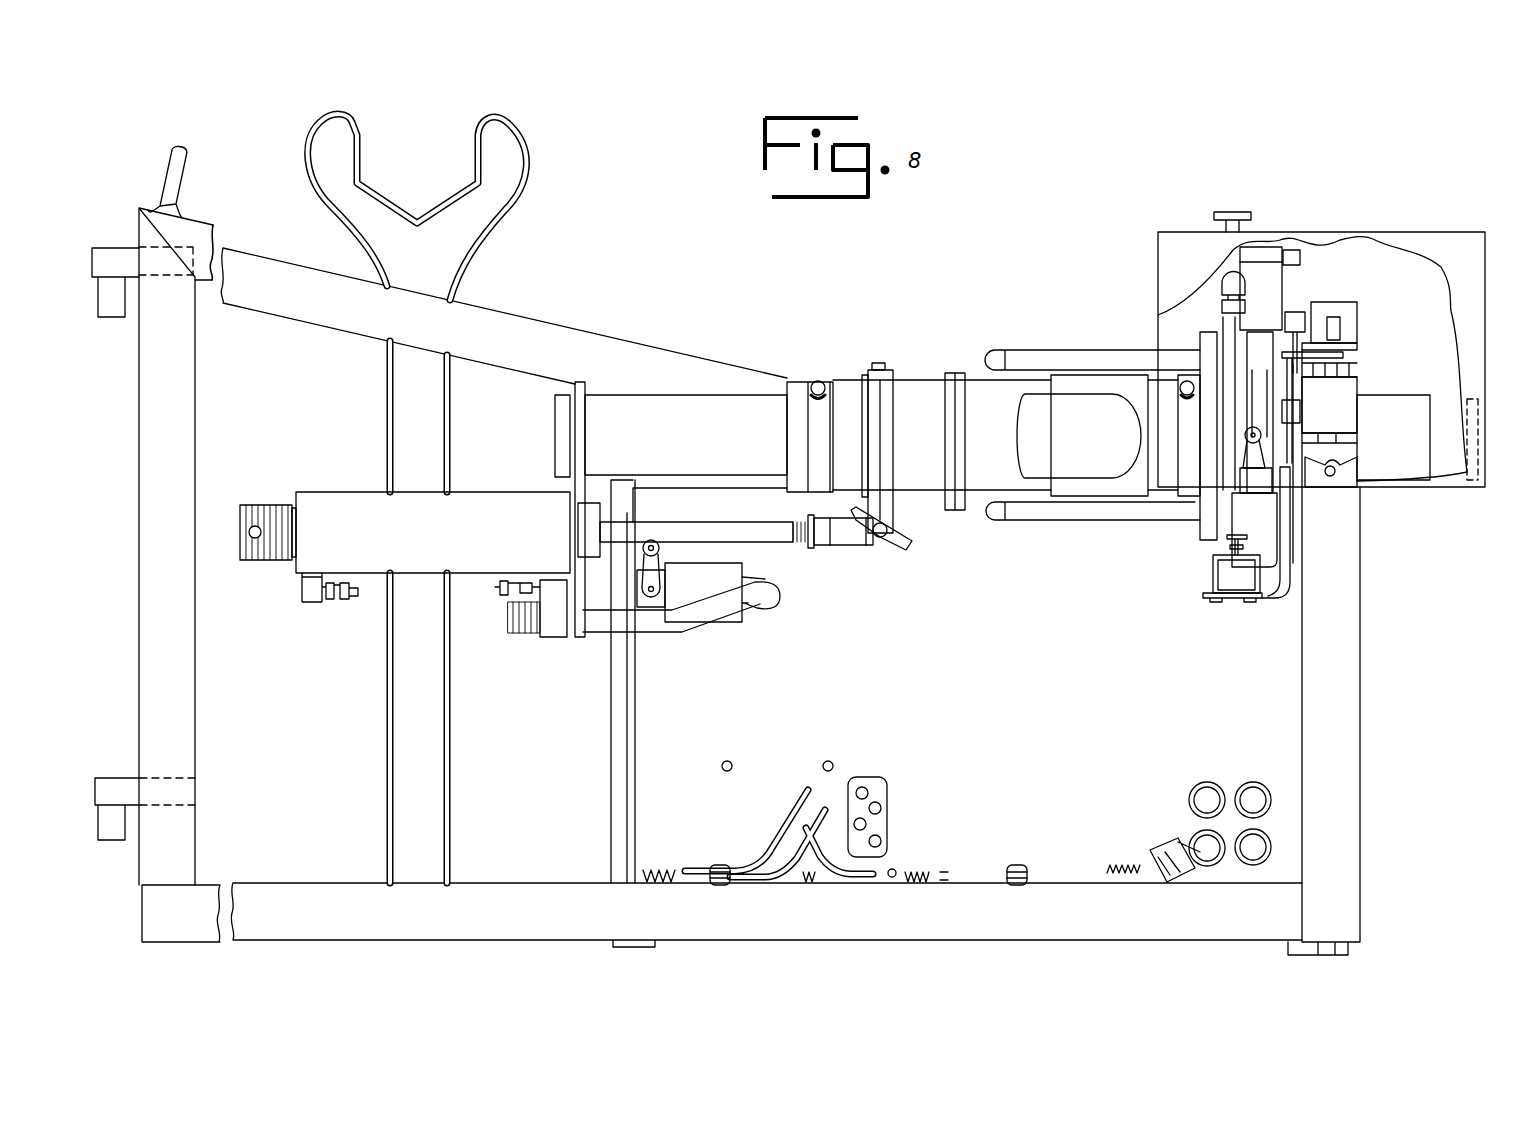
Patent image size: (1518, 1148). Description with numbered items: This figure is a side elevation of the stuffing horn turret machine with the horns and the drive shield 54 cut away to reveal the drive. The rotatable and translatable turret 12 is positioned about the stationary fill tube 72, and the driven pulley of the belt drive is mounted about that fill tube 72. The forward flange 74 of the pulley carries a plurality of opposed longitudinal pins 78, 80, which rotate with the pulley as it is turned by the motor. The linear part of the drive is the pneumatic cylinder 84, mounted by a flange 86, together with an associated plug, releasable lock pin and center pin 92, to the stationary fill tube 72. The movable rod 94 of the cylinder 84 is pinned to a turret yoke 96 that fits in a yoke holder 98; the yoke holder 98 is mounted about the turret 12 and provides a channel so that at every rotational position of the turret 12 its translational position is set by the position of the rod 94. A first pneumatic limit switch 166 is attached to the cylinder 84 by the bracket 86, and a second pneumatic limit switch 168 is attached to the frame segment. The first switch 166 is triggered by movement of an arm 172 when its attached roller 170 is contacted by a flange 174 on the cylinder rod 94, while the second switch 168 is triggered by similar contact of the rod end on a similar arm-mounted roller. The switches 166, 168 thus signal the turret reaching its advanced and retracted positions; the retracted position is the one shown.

The turret 12 is at (923, 482).
The drive shield 54 is at (1390, 227).
The fill tube 72 is at (676, 417).
The forward flange 74 is at (1238, 355).
The longitudinal pin 78 is at (1035, 359).
The longitudinal pin 80 is at (1031, 513).
The pneumatic cylinder 84 is at (468, 505).
The flange 86 is at (572, 402).
The center pin 92 is at (562, 443).
The movable rod 94 is at (782, 537).
The turret yoke 96 is at (863, 378).
The yoke holder 98 is at (878, 385).
The pneumatic limit switch 166 is at (700, 587).
The pneumatic limit switch 168 is at (1218, 553).
The roller 170 is at (660, 551).
The arm 172 is at (653, 577).
The flange 174 is at (808, 547).